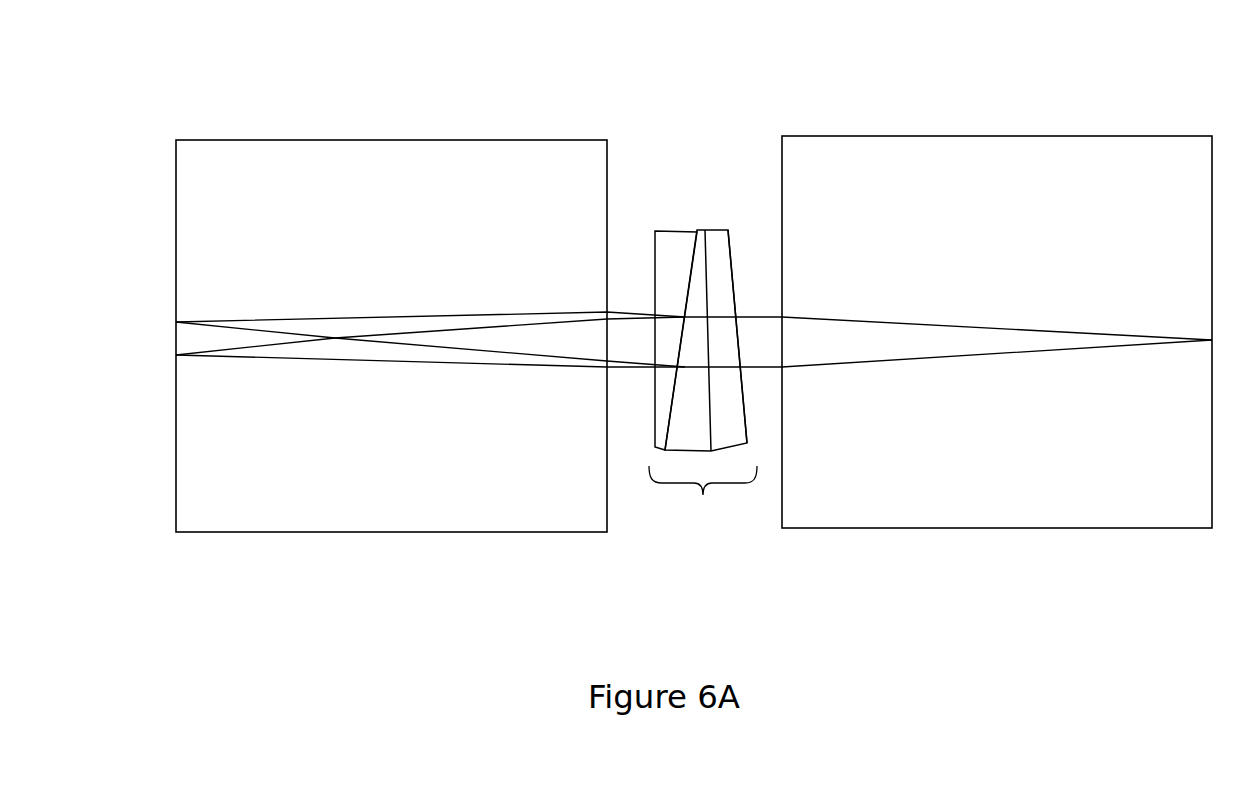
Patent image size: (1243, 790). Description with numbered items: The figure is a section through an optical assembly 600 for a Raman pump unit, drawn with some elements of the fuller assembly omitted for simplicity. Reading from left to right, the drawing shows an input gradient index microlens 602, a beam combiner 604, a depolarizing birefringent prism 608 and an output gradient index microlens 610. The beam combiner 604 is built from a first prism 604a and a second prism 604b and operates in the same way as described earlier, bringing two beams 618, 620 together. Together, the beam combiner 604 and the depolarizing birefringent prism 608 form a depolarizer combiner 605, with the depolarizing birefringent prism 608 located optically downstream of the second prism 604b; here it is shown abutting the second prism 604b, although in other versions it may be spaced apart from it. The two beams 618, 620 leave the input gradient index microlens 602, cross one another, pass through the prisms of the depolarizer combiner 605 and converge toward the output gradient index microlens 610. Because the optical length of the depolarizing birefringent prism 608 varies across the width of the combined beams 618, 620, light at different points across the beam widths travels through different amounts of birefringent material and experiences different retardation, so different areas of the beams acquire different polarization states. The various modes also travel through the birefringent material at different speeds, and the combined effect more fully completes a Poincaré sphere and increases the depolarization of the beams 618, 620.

The optical assembly 600 is at (802, 71).
The input gradient index microlens 602 is at (282, 165).
The beam combiner 604 is at (669, 198).
The first prism 604a is at (663, 229).
The second prism 604b is at (704, 233).
The depolarizer combiner 605 is at (703, 497).
The depolarizing birefringent prism 608 is at (721, 234).
The output gradient index microlens 610 is at (1108, 153).
The combined beam 618 is at (240, 322).
The combined beam 620 is at (240, 357).